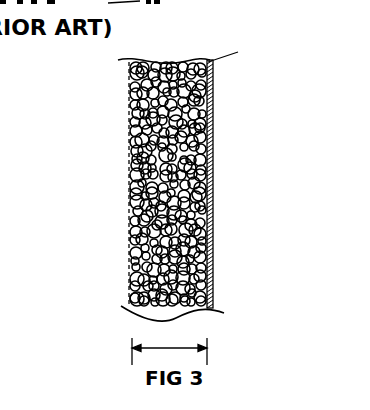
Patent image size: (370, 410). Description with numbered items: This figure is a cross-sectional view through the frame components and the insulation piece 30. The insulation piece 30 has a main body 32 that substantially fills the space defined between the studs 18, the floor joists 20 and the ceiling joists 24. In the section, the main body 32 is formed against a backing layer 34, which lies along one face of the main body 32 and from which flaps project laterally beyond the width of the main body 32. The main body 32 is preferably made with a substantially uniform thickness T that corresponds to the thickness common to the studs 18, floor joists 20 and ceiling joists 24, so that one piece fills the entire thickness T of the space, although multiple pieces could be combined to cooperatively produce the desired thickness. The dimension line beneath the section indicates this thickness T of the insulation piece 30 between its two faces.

The studs 18 is at (122, 212).
The floor joists 20 is at (122, 212).
The ceiling joists 24 is at (133, 277).
The insulation piece 30 is at (178, 63).
The main body 32 is at (214, 102).
The backing layer 34 is at (215, 157).
The thickness T is at (168, 347).